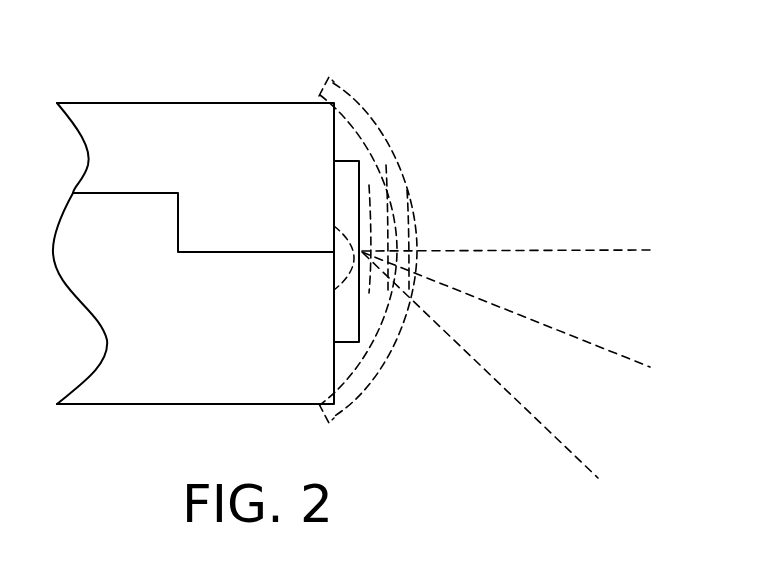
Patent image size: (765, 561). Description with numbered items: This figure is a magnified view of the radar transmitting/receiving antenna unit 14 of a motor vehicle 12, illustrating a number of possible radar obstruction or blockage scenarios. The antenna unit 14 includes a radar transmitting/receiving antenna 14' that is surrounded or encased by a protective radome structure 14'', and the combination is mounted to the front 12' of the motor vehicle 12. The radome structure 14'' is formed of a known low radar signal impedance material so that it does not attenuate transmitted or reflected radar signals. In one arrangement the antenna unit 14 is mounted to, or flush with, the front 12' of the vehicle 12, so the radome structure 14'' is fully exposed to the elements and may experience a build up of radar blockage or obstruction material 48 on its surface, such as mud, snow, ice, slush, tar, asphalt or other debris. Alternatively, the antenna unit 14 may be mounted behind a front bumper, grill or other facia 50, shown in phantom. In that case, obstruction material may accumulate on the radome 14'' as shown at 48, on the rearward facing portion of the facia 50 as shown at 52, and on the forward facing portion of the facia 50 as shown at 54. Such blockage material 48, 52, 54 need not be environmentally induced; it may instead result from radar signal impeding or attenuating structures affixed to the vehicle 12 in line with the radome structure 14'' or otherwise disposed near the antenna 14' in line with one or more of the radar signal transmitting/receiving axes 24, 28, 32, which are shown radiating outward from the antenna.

The motor vehicle 12 is at (193, 220).
The front of the motor vehicle 12' is at (399, 219).
The radar transmitting/receiving antenna unit 14 is at (289, 226).
The radar transmitting/receiving antenna 14' is at (319, 285).
The radome structure 14'' is at (313, 179).
The radar signal transmitting/receiving axis 24 is at (628, 250).
The radar signal transmitting/receiving axis 28 is at (607, 353).
The radar signal transmitting/receiving axis 32 is at (572, 452).
The radar blockage or obstruction material 48 is at (366, 283).
The front bumper, grill or other facia 50 is at (377, 123).
The radar blockage or obstruction material 52 is at (383, 213).
The radar blockage or obstruction material 54 is at (416, 229).